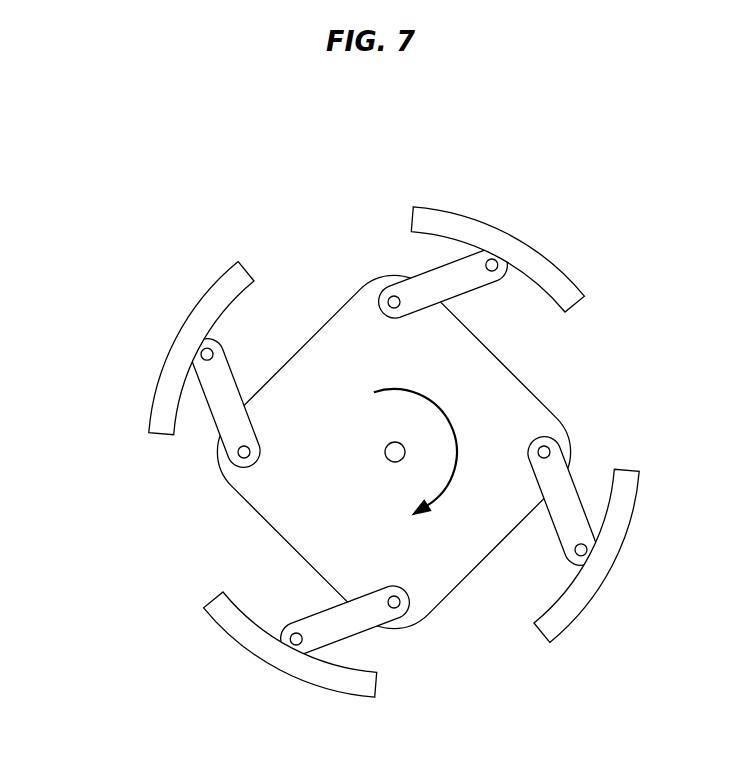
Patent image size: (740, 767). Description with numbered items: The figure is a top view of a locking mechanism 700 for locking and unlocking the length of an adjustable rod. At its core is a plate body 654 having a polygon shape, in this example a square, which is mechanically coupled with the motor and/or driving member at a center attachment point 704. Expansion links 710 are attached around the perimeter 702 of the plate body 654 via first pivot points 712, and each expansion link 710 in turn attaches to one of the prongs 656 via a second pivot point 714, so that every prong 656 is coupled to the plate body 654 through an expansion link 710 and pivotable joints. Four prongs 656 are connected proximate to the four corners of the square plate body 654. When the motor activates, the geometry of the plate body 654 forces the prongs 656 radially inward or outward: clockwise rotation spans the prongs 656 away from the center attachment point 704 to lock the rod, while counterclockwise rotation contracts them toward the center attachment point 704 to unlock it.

The locking mechanism 700 is at (344, 422).
The perimeter 702 is at (298, 552).
The center attachment point 704 is at (392, 445).
The plate body 654 is at (373, 451).
The prongs 656 is at (461, 215).
The expansion links 710 is at (467, 281).
The first pivot points 712 is at (388, 293).
The second pivot points 714 is at (498, 258).